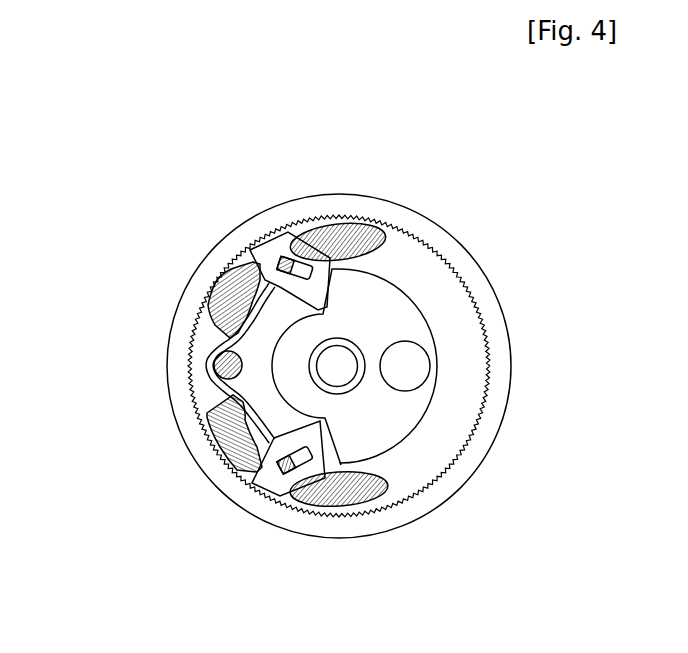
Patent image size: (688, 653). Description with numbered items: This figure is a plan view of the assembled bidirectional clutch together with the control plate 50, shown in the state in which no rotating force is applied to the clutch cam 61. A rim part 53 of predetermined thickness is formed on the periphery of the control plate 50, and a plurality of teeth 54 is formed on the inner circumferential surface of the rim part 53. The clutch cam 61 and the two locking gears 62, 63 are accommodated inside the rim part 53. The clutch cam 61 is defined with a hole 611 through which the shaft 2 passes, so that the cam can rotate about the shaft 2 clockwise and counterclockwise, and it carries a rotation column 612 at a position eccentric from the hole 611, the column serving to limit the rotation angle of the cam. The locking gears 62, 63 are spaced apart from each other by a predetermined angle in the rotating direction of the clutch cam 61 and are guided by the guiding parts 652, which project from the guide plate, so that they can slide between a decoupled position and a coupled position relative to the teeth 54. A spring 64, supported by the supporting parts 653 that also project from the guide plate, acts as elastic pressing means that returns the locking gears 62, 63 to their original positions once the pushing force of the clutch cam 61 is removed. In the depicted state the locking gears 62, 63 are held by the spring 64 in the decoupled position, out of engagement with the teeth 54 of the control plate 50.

The shaft 2 is at (346, 382).
The control plate 50 is at (382, 331).
The rim part 53 is at (442, 236).
The teeth 54 is at (406, 228).
The clutch cam 61 is at (455, 402).
The hole 611 is at (357, 342).
The rotation column 612 is at (417, 363).
The locking gear 62 is at (282, 240).
The locking gear 63 is at (280, 492).
The spring 64 is at (218, 443).
The guiding part 652 is at (318, 237).
The supporting part 653 is at (213, 403).